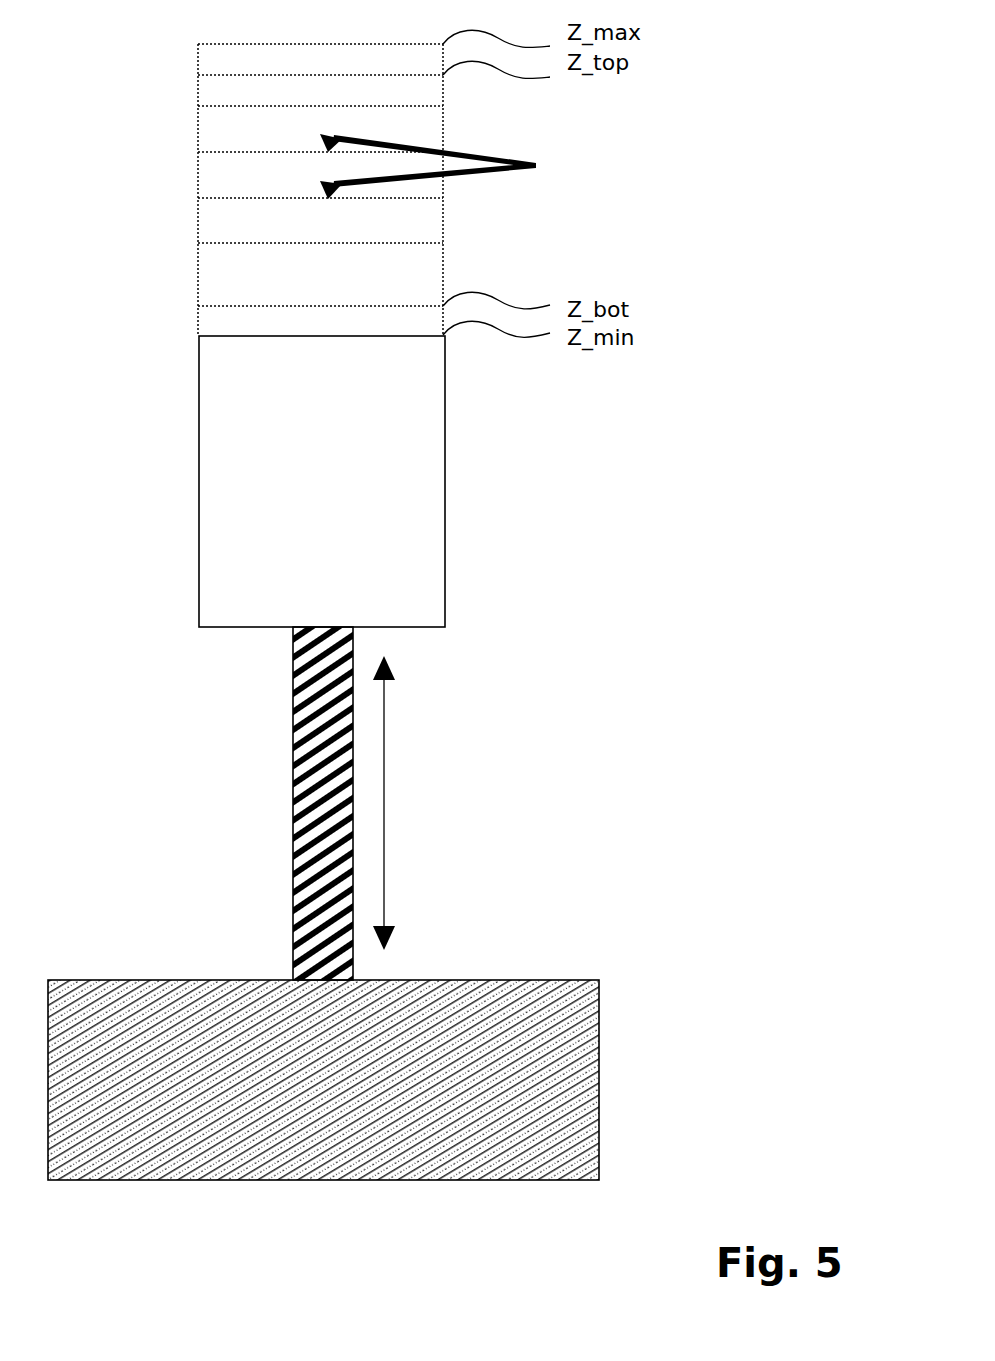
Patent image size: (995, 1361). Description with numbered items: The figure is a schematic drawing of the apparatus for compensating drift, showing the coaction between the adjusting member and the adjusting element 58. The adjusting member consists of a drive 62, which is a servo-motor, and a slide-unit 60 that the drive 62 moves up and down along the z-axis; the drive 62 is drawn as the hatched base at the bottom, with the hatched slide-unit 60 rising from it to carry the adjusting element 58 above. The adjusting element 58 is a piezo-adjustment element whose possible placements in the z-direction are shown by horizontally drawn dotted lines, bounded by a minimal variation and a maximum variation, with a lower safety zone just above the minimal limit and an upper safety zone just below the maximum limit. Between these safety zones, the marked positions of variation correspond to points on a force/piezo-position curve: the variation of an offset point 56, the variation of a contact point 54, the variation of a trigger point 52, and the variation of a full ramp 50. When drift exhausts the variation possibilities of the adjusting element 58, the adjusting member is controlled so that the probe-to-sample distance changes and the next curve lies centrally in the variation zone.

The variation of a full ramp 50 is at (443, 106).
The variation of a trigger point 52 is at (443, 152).
The variation of a contact point 54 is at (443, 198).
The variation of an offset point 56 is at (443, 243).
The adjusting element 58 is at (445, 472).
The slide-unit 60 is at (353, 655).
The drive 62 is at (599, 980).